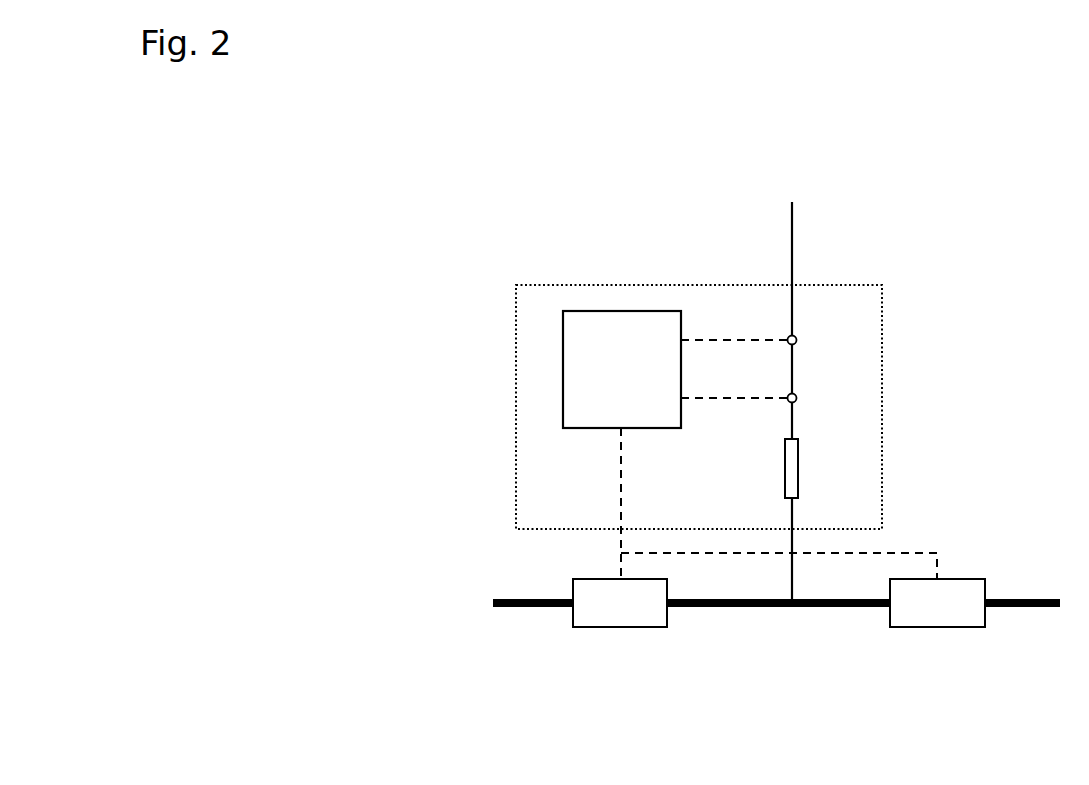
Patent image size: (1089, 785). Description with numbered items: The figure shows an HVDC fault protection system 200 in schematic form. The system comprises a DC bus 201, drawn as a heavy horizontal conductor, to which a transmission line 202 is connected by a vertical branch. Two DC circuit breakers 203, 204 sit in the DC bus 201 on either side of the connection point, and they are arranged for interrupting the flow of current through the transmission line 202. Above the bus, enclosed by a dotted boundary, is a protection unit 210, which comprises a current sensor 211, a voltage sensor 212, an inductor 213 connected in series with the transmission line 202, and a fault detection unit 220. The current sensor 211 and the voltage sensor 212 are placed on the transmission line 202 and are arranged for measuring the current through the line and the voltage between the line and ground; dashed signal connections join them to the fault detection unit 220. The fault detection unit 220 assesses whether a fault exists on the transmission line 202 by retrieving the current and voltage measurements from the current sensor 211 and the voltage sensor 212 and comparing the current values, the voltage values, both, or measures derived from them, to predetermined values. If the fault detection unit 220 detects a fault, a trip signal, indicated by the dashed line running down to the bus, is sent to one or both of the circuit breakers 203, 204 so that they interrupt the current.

The fault protection system 200 is at (457, 730).
The DC bus 201 is at (743, 605).
The transmission line 202 is at (828, 402).
The DC circuit breaker 203 is at (620, 603).
The DC circuit breaker 204 is at (937, 603).
The protection unit 210 is at (699, 407).
The current sensor 211 is at (773, 341).
The voltage sensor 212 is at (773, 399).
The inductor 213 is at (825, 468).
The fault detection unit 220 is at (750, 445).